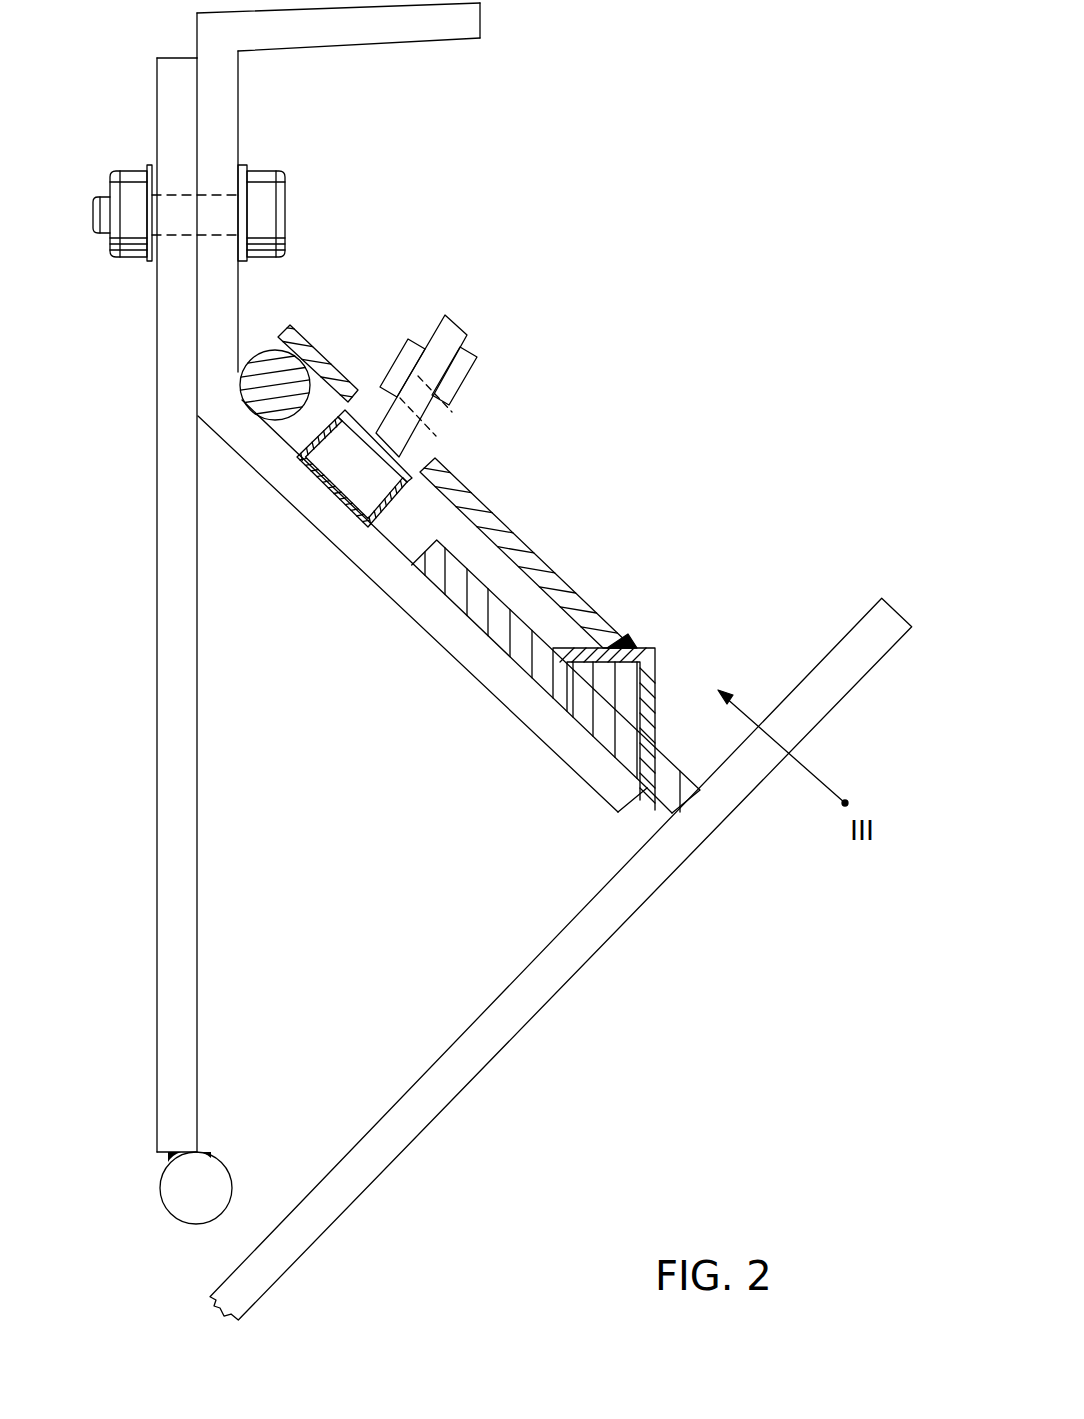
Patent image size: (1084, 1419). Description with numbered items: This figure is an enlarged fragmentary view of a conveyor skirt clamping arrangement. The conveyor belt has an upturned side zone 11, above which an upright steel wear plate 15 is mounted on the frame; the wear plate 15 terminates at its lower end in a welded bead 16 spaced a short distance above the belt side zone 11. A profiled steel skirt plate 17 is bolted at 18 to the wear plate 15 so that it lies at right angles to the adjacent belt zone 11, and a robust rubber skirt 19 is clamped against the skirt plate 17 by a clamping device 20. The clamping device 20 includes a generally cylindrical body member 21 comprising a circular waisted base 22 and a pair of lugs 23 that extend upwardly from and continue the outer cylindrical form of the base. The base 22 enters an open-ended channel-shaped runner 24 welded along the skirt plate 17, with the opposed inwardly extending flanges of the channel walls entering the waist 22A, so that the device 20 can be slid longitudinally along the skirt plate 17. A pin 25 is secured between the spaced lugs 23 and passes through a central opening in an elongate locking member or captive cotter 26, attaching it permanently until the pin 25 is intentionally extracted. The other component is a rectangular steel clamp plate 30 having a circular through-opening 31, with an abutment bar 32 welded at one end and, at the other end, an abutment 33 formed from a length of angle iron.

The upturned side zone 11 is at (485, 1050).
The wear plate 15 is at (168, 1050).
The welded bead 16 is at (172, 1205).
The skirt plate 17 is at (453, 45).
The bolt 18 is at (281, 219).
The rubber skirt 19 is at (642, 766).
The clamping device 20 is at (578, 478).
The body member 21 is at (488, 405).
The waisted base 22 is at (382, 463).
The waist 22A is at (357, 462).
The lug 23 is at (432, 341).
The channel-shaped runner 24 is at (389, 472).
The pin 25 is at (455, 432).
The captive cotter 26 is at (458, 368).
The clamp plate 30 is at (566, 580).
The through-opening 31 is at (346, 393).
The abutment bar 32 is at (246, 398).
The abutment 33 is at (658, 696).